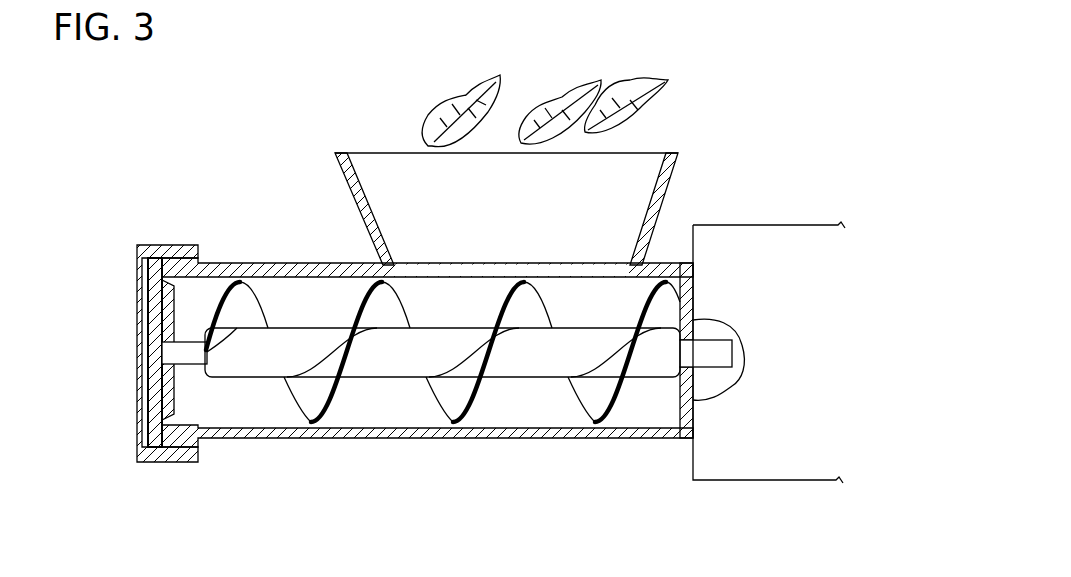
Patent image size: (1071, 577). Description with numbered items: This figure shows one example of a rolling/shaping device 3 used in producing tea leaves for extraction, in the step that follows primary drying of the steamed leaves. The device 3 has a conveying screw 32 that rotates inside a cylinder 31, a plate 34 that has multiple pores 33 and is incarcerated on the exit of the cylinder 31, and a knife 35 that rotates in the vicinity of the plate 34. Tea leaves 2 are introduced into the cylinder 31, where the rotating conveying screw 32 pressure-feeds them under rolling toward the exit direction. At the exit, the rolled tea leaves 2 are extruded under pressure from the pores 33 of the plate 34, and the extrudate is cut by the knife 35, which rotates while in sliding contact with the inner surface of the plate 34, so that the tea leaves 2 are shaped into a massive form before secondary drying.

The tea leaves 2 is at (643, 113).
The rolling/shaping device 3 is at (742, 170).
The cylinder 31 is at (547, 440).
The conveying screw 32 is at (407, 380).
The pores 33 is at (140, 301).
The plate 34 is at (155, 258).
The knife 35 is at (195, 313).